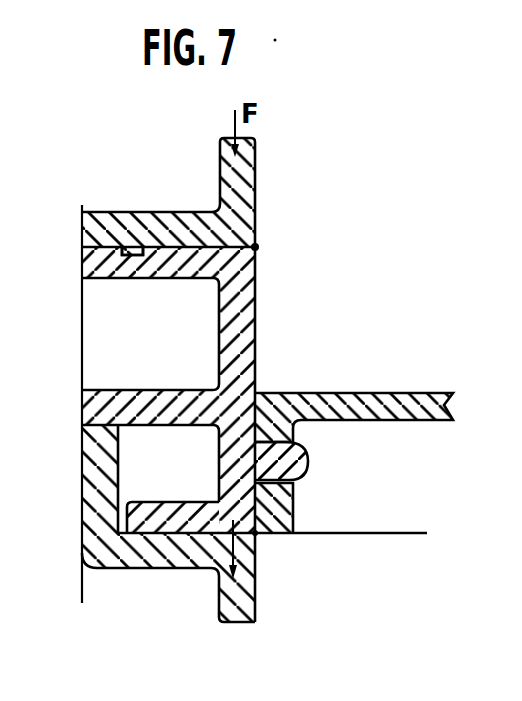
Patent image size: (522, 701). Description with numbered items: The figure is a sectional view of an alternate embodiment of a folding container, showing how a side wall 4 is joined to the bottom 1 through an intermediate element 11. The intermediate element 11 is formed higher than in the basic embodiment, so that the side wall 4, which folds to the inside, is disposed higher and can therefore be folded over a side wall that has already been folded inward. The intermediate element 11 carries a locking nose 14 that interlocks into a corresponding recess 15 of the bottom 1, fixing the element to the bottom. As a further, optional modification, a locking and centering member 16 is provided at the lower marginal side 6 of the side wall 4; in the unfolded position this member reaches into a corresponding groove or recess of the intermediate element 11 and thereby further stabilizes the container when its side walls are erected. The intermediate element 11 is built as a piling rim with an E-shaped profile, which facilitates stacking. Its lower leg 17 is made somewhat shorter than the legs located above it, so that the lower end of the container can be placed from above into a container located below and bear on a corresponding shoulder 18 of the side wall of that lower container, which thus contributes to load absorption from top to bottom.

The bottom 1 is at (383, 396).
The side wall 4 is at (249, 192).
The lower marginal side 6 is at (158, 218).
The intermediate element 11 is at (247, 293).
The locking nose 14 is at (303, 460).
The recess 15 is at (283, 484).
The locking and centering member 16 is at (126, 260).
The lower leg 17 is at (125, 553).
The shoulder 18 is at (172, 555).